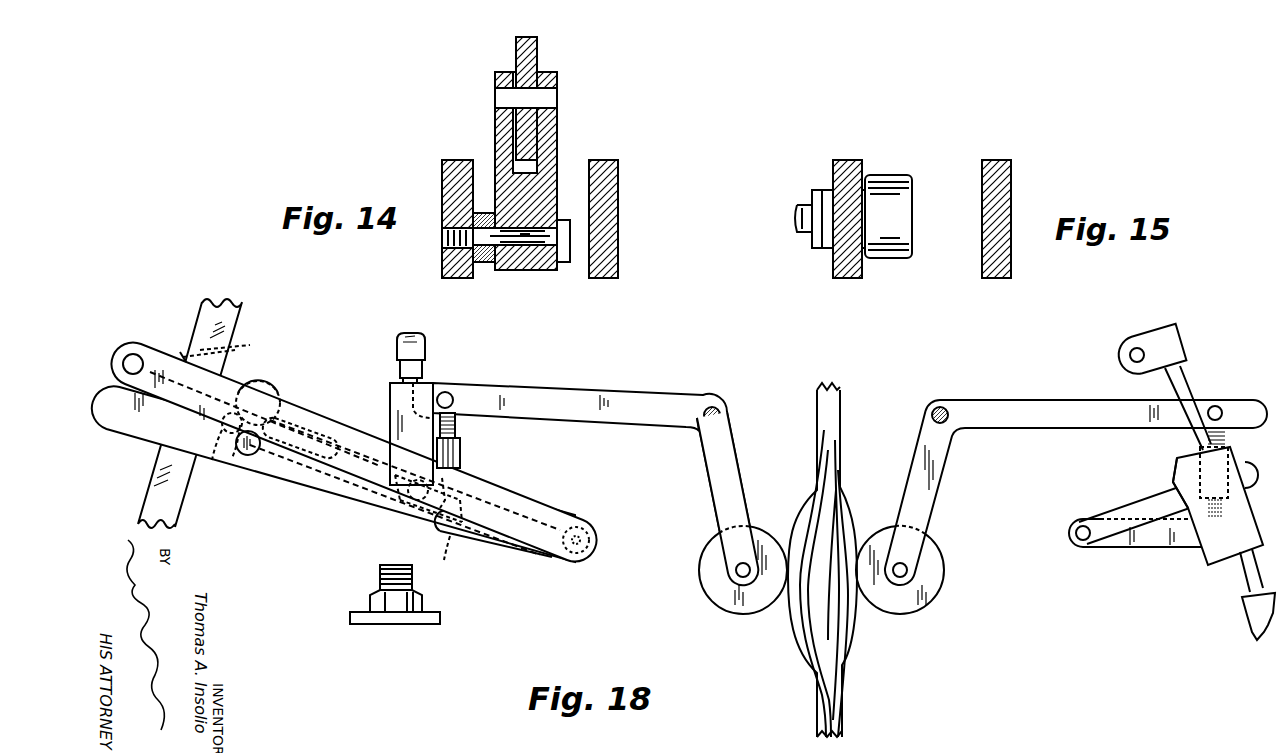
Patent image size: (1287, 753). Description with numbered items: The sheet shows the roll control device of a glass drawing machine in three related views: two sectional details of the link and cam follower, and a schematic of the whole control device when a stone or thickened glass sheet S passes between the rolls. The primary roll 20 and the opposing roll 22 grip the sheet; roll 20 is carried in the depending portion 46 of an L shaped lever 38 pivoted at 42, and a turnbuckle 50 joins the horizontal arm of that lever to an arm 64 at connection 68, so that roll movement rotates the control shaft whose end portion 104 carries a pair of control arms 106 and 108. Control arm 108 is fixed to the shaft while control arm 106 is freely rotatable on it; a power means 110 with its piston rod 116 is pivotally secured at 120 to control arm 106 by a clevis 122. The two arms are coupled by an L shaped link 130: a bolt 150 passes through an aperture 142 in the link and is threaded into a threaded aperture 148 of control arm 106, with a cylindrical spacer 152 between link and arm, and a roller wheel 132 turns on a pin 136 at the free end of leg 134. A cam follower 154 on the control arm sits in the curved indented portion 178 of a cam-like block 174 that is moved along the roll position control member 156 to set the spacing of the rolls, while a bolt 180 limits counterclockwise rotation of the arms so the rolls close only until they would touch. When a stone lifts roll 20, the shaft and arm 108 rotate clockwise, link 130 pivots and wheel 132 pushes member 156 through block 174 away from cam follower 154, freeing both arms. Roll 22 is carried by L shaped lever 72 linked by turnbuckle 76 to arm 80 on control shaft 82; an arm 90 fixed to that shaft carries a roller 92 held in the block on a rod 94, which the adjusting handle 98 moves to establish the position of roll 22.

In FIG. 14, the roller wheel 132 is at (537, 47).
In FIG. 18, the roller wheel 132 is at (276, 388).
In FIG. 14, the leg 134 is at (495, 131).
In FIG. 14, the pin 136 is at (557, 98).
In FIG. 14, the cylindrical spacer 152 is at (485, 213).
In FIG. 14, the L shaped link 130 is at (570, 147).
In FIG. 18, the L shaped link 130 is at (290, 460).
In FIG. 14, the control arm 106 is at (442, 176).
In FIG. 15, the control arm 106 is at (833, 171).
In FIG. 18, the control arm 106 is at (332, 496).
In FIG. 14, the control arm 108 is at (618, 208).
In FIG. 15, the control arm 108 is at (1011, 192).
In FIG. 18, the control arm 108 is at (384, 438).
In FIG. 14, the threaded aperture 148 is at (442, 242).
In FIG. 14, the aperture 142 is at (519, 245).
In FIG. 14, the bolt 150 is at (540, 258).
In FIG. 15, the cam follower 154 is at (888, 175).
In FIG. 18, the cam follower 154 is at (247, 456).
In FIG. 18, the roll position control member 156 is at (200, 307).
In FIG. 18, the cam-like block 174 is at (225, 362).
In FIG. 18, the curved indented portion 178 is at (228, 445).
In FIG. 18, the clevis 122 is at (390, 393).
In FIG. 18, the pivot connection 120 is at (408, 505).
In FIG. 18, the power means 110 is at (440, 348).
In FIG. 18, the piston rod 116 is at (422, 365).
In FIG. 18, the L shaped lever 38 is at (640, 383).
In FIG. 18, the depending portion 46 is at (706, 468).
In FIG. 18, the pivot mounting 42 is at (728, 405).
In FIG. 18, the turnbuckle 50 is at (461, 452).
In FIG. 18, the primary roll 20 is at (708, 535).
In FIG. 18, the roll 22 is at (942, 540).
In FIG. 18, the end portion 104 is at (598, 541).
In FIG. 18, the arm 64 is at (491, 549).
In FIG. 18, the connection 68 is at (457, 539).
In FIG. 18, the L shaped lever 72 is at (1121, 400).
In FIG. 18, the rod 94 is at (1196, 398).
In FIG. 18, the turnbuckle 76 is at (1226, 465).
In FIG. 18, the roller 92 is at (1178, 468).
In FIG. 18, the arm 90 is at (1136, 501).
In FIG. 18, the control shaft 82 is at (1079, 525).
In FIG. 18, the arm 80 is at (1153, 548).
In FIG. 18, the adjusting handle 98 is at (1243, 610).
In FIG. 18, the web / strand S is at (817, 426).
In FIG. 18, the bolt 180 is at (380, 572).